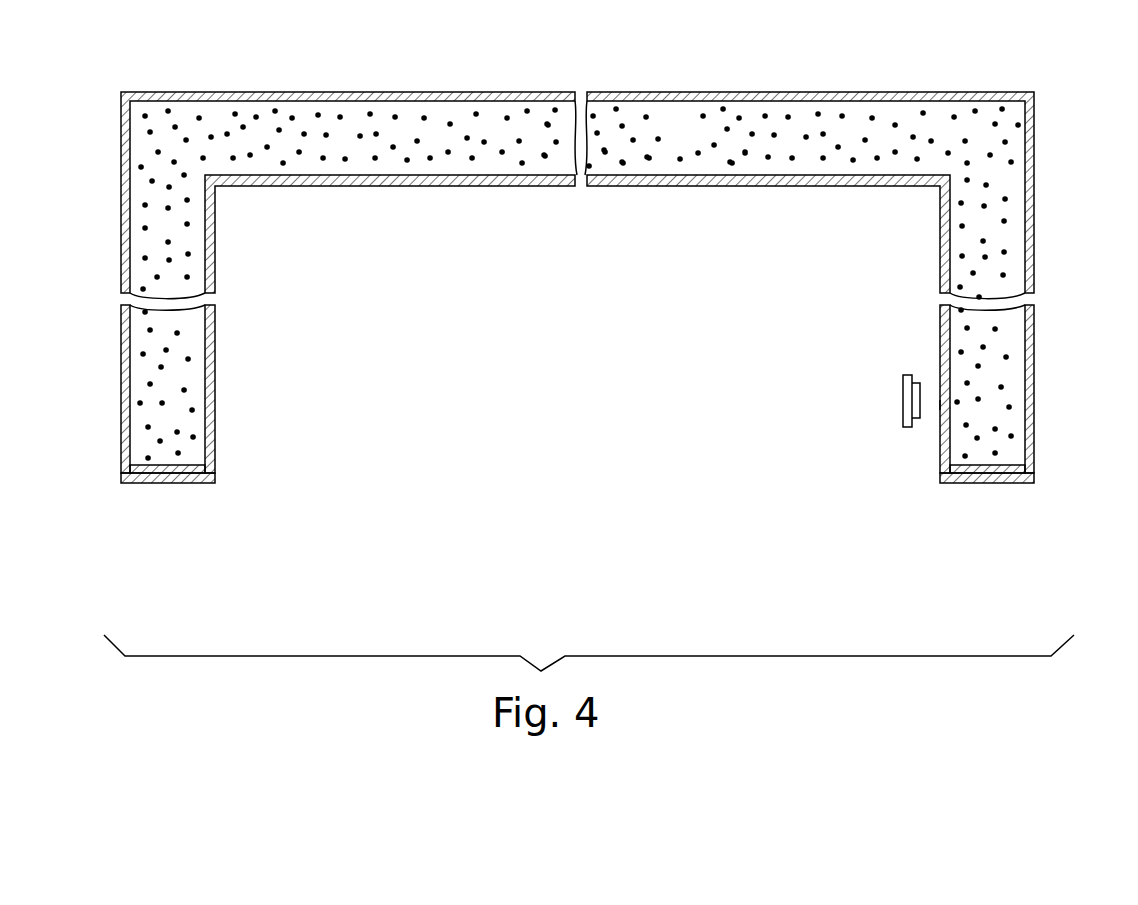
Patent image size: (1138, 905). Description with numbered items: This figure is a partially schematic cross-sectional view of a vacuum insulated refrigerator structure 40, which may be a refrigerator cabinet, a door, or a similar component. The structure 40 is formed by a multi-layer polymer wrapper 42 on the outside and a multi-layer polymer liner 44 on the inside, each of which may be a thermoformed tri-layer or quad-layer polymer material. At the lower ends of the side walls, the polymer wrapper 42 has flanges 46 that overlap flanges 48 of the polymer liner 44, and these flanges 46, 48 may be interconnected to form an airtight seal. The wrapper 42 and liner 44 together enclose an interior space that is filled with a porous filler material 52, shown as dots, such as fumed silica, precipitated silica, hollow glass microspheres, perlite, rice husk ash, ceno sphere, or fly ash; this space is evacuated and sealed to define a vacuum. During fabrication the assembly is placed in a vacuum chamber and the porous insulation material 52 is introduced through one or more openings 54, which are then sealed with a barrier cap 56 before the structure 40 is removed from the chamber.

The vacuum insulated refrigerator structure 40 is at (629, 302).
The multi-layer polymer wrapper 42 is at (750, 92).
The multi-layer polymer liner 44 is at (708, 186).
The flanges of polymer wrapper 46 is at (172, 483).
The flanges of polymer liner 48 is at (172, 475).
The porous filler material 52 is at (360, 160).
The openings 54 is at (942, 405).
The barrier cap 56 is at (907, 427).